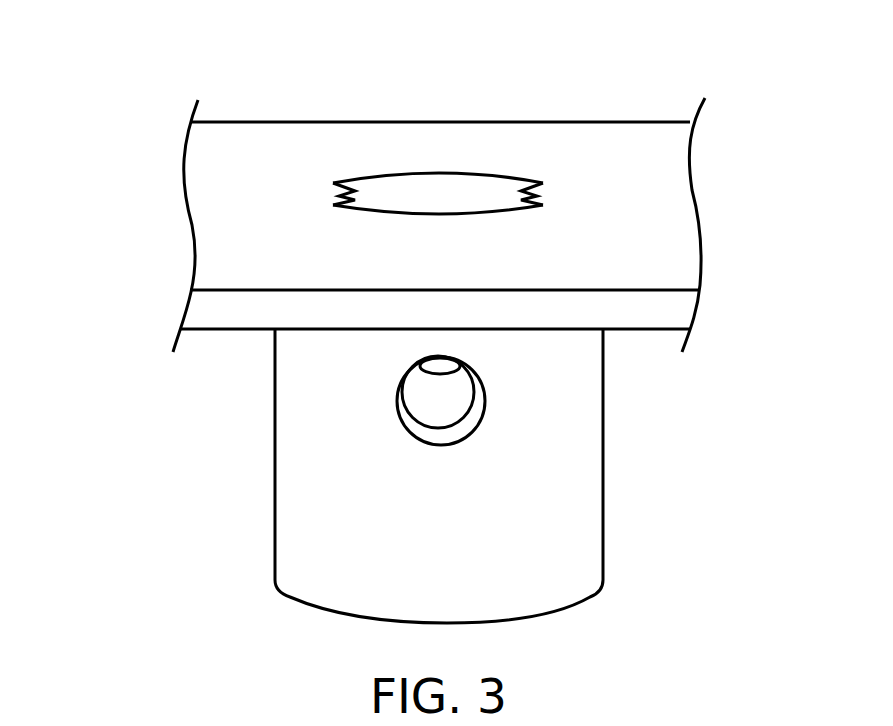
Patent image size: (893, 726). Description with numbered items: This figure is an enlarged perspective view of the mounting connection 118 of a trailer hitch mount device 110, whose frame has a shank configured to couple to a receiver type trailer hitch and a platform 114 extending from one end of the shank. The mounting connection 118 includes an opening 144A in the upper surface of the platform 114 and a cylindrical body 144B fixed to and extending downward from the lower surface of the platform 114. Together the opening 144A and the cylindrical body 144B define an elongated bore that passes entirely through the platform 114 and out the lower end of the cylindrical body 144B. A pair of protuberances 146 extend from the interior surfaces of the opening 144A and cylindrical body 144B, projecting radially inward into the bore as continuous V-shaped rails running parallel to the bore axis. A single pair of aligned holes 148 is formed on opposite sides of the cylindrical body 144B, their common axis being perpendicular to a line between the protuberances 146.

The trailer hitch mount device 110 is at (130, 157).
The platform 114 is at (643, 150).
The mounting connection 118 is at (438, 150).
The opening 144A is at (453, 201).
The cylindrical body 144B is at (583, 427).
The protuberances 146 is at (352, 184).
The holes 148 is at (407, 433).